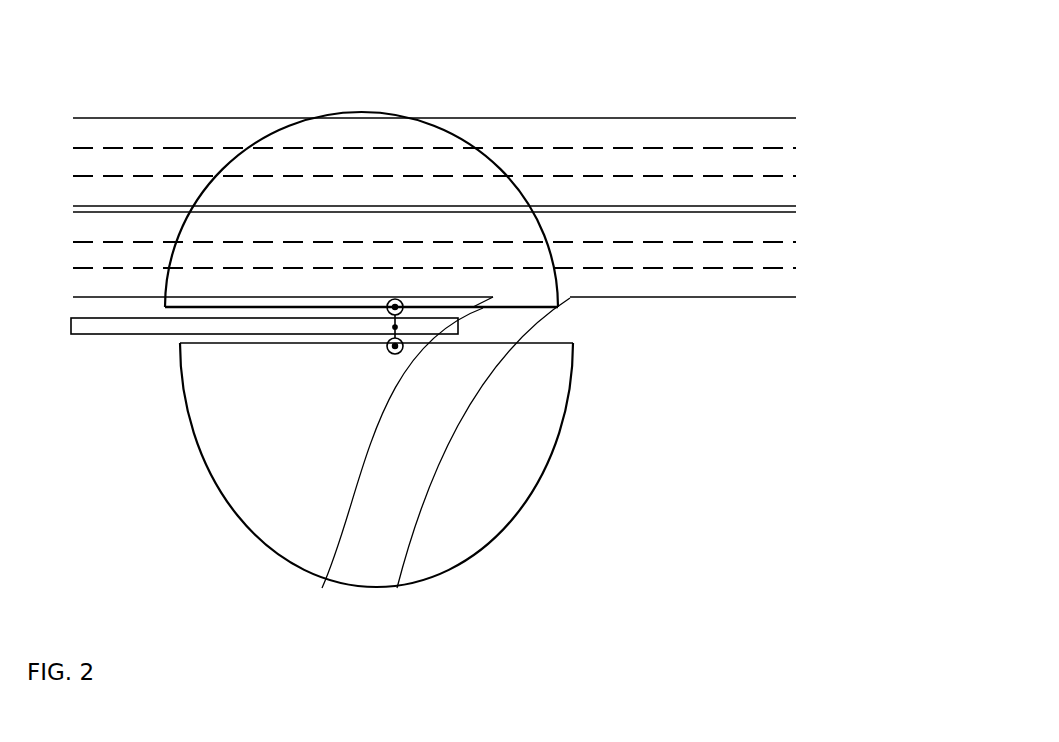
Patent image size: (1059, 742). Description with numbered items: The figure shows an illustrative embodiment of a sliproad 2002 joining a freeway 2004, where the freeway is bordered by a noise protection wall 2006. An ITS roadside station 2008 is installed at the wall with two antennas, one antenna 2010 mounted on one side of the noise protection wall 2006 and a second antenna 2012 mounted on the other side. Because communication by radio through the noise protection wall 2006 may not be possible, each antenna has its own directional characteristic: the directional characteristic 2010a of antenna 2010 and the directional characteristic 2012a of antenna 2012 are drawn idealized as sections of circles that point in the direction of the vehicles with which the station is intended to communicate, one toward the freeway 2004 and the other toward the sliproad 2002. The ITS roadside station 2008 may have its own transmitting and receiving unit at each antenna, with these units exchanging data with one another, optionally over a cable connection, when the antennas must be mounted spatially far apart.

The sliproad 2002 is at (416, 522).
The freeway 2004 is at (623, 288).
The noise protection wall 2006 is at (112, 329).
The ITS roadside station 2008 is at (391, 329).
The antenna 2010 is at (387, 304).
The directional characteristic 2010a is at (383, 112).
The antenna 2012 is at (390, 353).
The directional characteristic 2012a is at (529, 493).